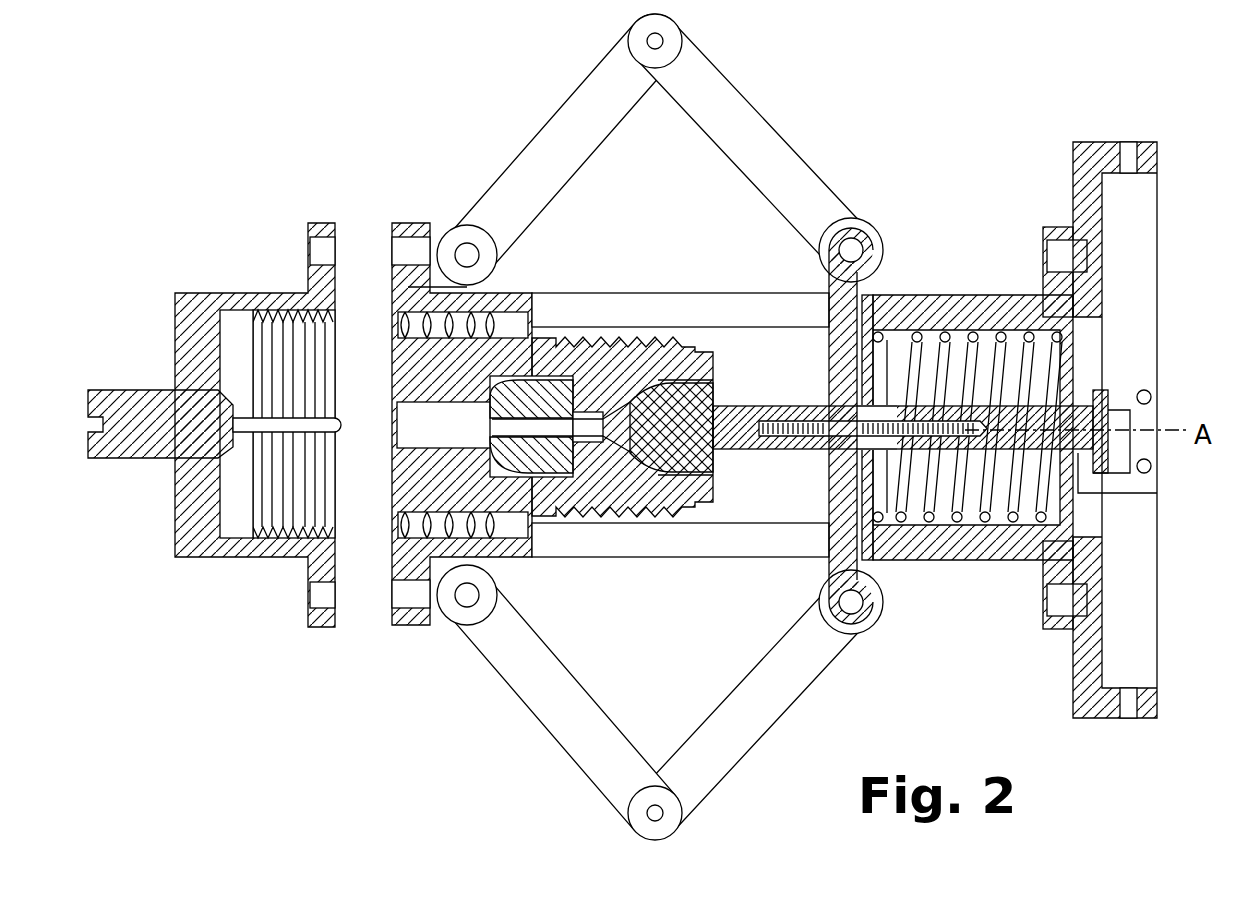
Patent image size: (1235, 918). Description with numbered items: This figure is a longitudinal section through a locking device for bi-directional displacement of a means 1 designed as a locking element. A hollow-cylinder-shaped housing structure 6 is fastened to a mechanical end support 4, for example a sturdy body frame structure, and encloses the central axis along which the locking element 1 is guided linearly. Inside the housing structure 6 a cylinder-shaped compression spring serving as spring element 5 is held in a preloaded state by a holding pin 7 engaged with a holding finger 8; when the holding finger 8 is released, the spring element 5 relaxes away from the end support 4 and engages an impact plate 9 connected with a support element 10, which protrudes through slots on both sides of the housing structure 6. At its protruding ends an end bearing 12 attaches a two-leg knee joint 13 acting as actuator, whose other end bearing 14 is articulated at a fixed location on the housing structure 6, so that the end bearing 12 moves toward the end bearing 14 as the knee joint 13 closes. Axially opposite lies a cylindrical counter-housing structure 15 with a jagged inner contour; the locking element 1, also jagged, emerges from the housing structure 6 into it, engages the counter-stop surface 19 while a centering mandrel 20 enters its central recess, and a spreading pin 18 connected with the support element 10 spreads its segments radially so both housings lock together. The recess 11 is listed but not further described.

The locking element 1 is at (393, 348).
The mechanical end support 4 is at (1142, 228).
The spring element 5 is at (990, 493).
The housing structure 6 is at (930, 545).
The holding pin 7 is at (1083, 408).
The holding finger 8 is at (1142, 422).
The impact plate 9 is at (908, 298).
The support element 10 is at (833, 305).
The recess 11 is at (658, 545).
The end bearing 12 is at (824, 434).
The knee joint 13 is at (723, 95).
The end bearing 14 is at (464, 253).
The counter-housing structure 15 is at (195, 548).
The spreading pin 18 is at (545, 382).
The counter-stop surface 19 is at (226, 335).
The centering mandrel 20 is at (147, 450).